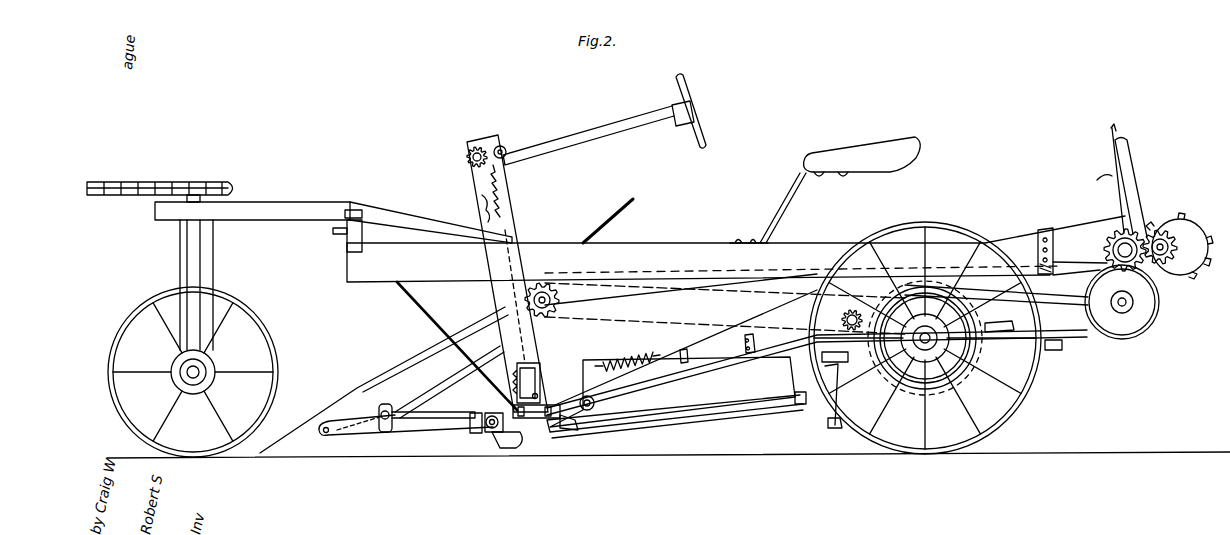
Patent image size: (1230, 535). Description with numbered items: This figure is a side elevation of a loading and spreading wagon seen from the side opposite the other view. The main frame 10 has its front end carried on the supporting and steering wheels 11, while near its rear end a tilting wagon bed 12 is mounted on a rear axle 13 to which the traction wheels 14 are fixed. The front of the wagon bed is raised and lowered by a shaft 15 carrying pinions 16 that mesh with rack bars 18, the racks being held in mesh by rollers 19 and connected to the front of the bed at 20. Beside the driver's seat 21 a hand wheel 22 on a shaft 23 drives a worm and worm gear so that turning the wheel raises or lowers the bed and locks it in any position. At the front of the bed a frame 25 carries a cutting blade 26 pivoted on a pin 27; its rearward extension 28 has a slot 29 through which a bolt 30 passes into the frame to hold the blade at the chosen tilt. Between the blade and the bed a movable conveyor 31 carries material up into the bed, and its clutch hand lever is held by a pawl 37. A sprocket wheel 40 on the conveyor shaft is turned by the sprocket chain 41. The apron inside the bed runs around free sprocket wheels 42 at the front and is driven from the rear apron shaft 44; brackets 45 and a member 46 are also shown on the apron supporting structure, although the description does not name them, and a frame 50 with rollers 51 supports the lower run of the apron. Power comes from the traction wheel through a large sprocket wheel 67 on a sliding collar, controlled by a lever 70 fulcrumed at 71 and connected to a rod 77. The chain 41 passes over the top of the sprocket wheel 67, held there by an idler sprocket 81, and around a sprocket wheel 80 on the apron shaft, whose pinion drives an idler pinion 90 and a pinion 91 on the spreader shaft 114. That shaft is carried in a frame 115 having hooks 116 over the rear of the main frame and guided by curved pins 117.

The main frame 10 is at (736, 249).
The supporting and steering wheels 11 is at (268, 332).
The tilting wagon bed 12 is at (1048, 232).
The rear axle 13 is at (927, 350).
The traction wheels 14 is at (1034, 386).
The shaft 15 is at (467, 157).
The pinions 16 is at (472, 165).
The rack bars 18 is at (503, 181).
The rollers 19 is at (507, 152).
The connection of rack bars to wagon bed 20 is at (545, 382).
The driver's seat 21 is at (825, 190).
The hand wheel 22 is at (705, 120).
The shaft 23 is at (608, 135).
The frame 25 is at (403, 387).
The cutting blade 26 is at (292, 428).
The pin 27 is at (325, 434).
The rearward extension 28 is at (378, 436).
The slot 29 is at (392, 424).
The bolt 30 is at (440, 418).
The movable conveyor 31 is at (443, 338).
The pawl 37 is at (552, 300).
The sprocket wheel 40 is at (558, 297).
The sprocket chain 41 is at (688, 307).
The sprocket wheels 42 is at (493, 432).
The rear apron shaft 44 is at (1122, 313).
The bracket 45 is at (476, 433).
The hopper frame 46 is at (758, 385).
The frame 50 is at (740, 400).
The rollers 51 is at (512, 448).
The large sprocket wheel 67 is at (942, 388).
The lever 70 is at (850, 378).
The fulcrum 71 is at (1005, 335).
The rod 77 is at (833, 428).
The sprocket wheel 80 is at (1137, 333).
The idler sprocket 81 is at (838, 310).
The idler pinion 90 is at (1112, 240).
The pinion 91 is at (1180, 232).
The spreader shaft 114 is at (1163, 252).
The frame 115 is at (1136, 172).
The hooks 116 is at (1114, 128).
The curved pins 117 is at (1100, 177).